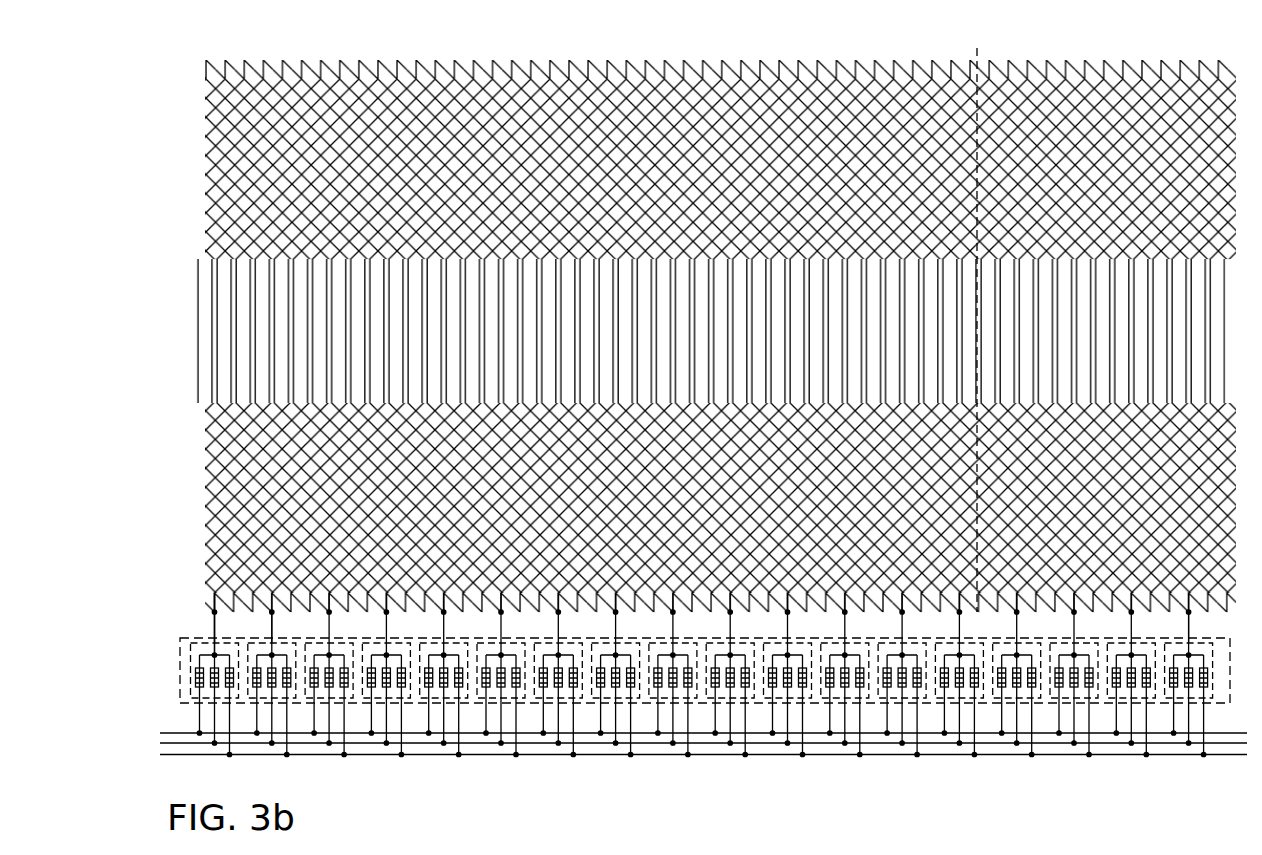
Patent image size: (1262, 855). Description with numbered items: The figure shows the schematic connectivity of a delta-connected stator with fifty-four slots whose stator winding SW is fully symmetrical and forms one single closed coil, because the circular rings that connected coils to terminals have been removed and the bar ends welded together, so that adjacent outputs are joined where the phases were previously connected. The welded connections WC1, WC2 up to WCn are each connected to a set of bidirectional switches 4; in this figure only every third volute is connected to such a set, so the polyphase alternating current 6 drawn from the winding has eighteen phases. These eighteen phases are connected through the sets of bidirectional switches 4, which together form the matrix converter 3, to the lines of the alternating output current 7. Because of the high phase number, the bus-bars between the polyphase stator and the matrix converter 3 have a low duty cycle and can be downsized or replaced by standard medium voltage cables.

The stator winding SW is at (188, 62).
The matrix converter 3 is at (180, 678).
The bidirectional switch 4 is at (1215, 652).
The polyphase alternating current 6 is at (213, 627).
The alternating output current 7 is at (1237, 755).
The welded connection WC1 is at (271, 615).
The welded connection WC2 is at (330, 615).
The welded connection WCn is at (1194, 607).